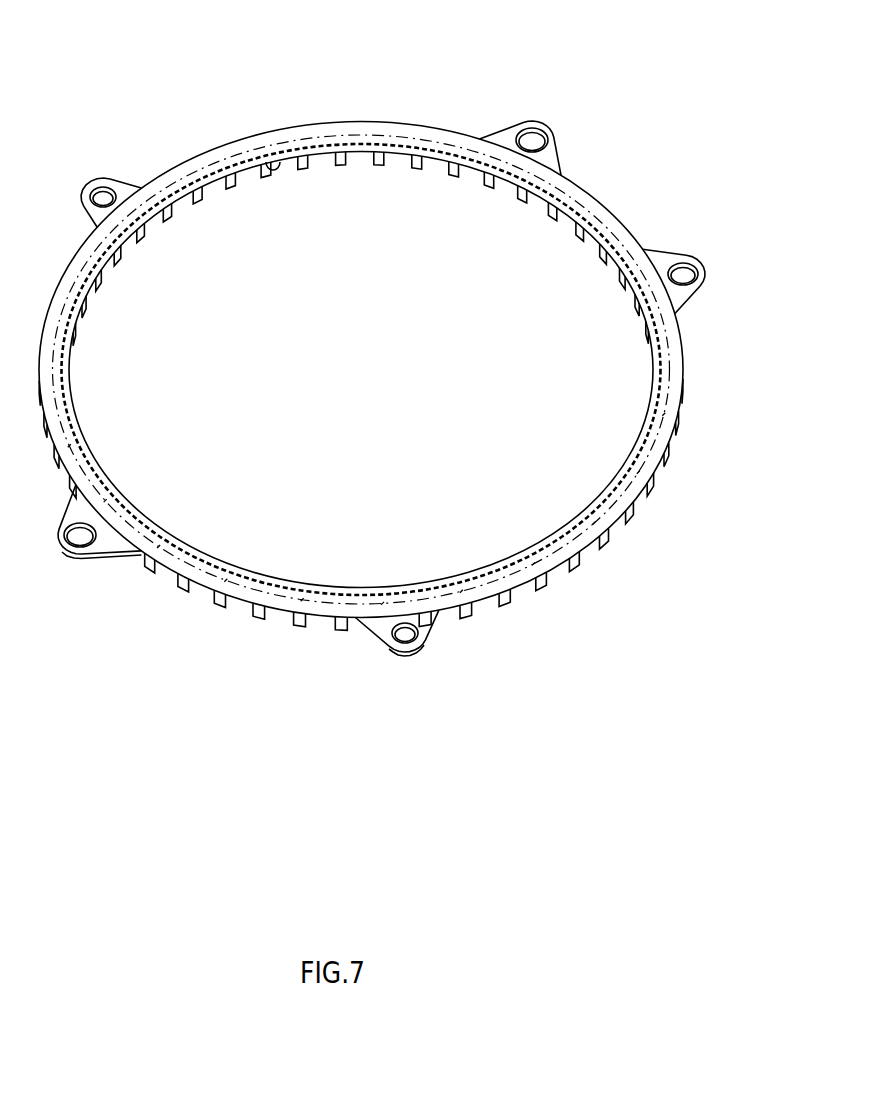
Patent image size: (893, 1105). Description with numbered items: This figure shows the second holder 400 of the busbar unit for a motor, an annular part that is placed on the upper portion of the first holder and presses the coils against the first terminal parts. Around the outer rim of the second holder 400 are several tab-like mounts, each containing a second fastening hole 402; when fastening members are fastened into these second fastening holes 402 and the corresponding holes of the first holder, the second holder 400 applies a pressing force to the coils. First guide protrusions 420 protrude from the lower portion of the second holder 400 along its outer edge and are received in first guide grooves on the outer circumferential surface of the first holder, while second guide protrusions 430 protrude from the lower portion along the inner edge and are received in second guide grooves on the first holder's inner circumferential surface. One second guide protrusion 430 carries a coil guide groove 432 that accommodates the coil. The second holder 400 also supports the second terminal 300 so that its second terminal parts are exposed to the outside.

The second terminal 300 is at (411, 362).
The second holder 400 is at (585, 193).
The second fastening holes 402 is at (532, 136).
The first guide protrusions 420 is at (512, 601).
The second guide protrusions 430 is at (263, 160).
The coil guide groove 432 is at (283, 172).